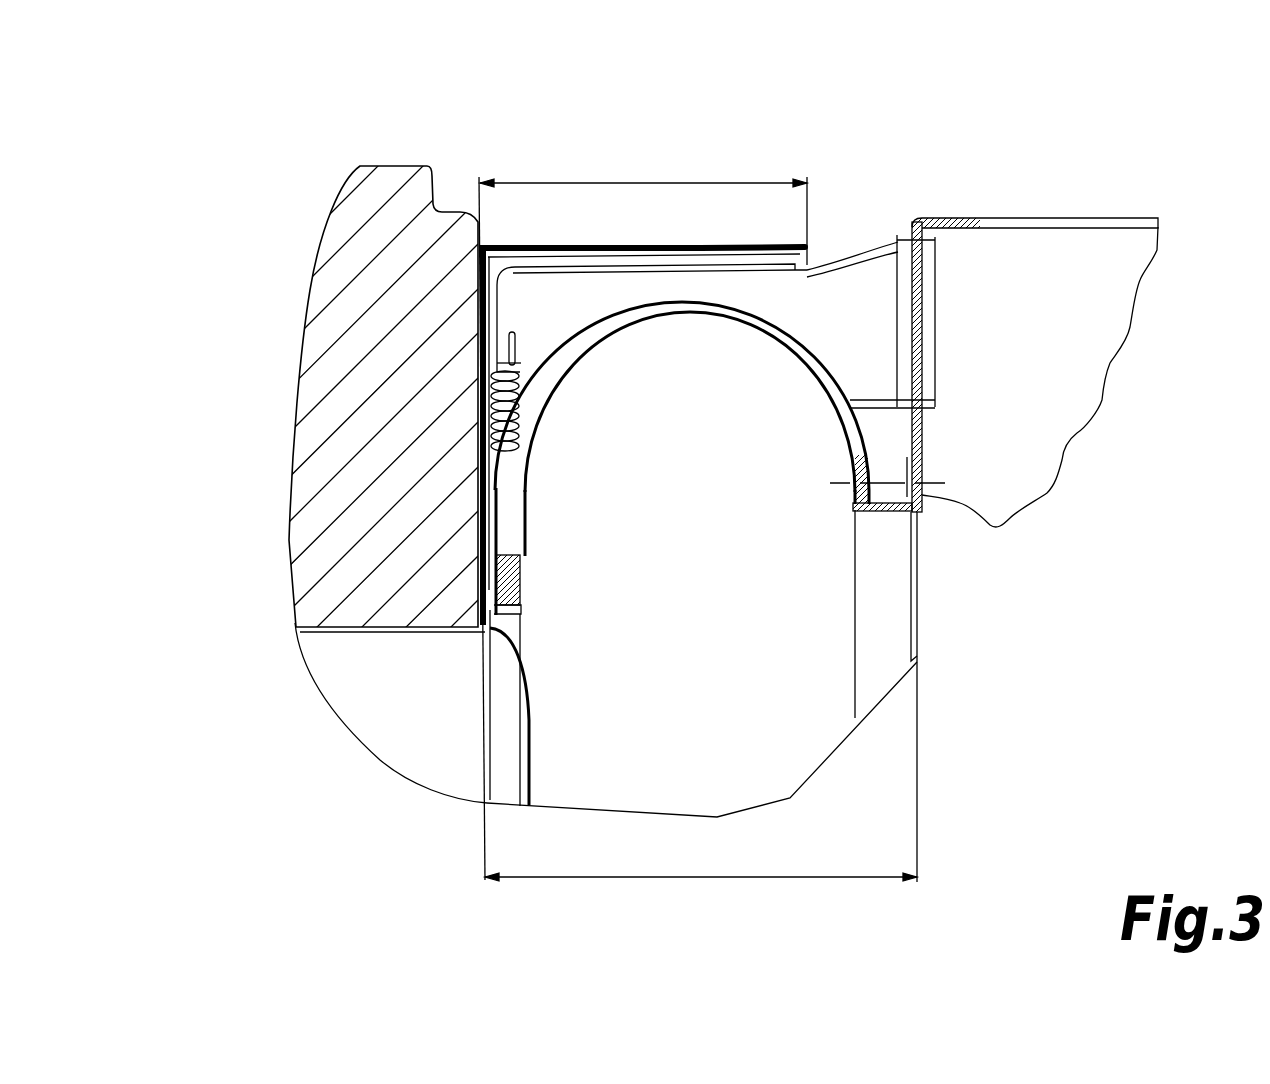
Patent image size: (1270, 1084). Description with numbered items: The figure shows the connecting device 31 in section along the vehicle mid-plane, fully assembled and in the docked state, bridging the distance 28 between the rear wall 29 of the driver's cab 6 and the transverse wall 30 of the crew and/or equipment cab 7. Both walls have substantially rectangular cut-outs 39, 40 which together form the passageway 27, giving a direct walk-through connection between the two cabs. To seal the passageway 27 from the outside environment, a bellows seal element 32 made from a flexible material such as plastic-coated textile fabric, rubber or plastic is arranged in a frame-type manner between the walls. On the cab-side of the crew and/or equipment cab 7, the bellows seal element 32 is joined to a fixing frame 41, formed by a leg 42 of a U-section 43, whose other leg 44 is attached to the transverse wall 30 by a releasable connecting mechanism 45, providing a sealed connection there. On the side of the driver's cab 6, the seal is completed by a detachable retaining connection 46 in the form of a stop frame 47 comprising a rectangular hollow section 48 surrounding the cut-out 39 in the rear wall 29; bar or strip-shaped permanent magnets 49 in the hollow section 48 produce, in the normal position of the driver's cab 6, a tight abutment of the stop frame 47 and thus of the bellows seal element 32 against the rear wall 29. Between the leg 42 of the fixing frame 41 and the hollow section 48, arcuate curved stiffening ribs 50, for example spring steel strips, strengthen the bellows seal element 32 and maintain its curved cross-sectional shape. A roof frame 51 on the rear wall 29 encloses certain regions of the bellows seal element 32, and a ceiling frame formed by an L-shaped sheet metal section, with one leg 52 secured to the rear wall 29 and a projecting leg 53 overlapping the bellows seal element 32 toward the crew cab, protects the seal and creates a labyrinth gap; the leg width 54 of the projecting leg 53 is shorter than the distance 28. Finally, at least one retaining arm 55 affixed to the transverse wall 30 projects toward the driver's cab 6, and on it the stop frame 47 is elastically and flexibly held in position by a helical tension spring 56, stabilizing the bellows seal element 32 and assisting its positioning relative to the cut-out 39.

The driver's cab 6 is at (320, 292).
The crew and/or equipment cab 7 is at (1060, 277).
The passageway 27 is at (918, 540).
The distance 28 is at (705, 880).
The rear wall 29 is at (485, 722).
The transverse wall 30 is at (918, 598).
The connecting device 31 is at (797, 170).
The bellows seal element 32 is at (808, 300).
The cut-out 39 is at (503, 756).
The cut-out 40 is at (908, 618).
The fixing frame 41 is at (840, 507).
The leg 42 is at (855, 468).
The U-section 43 is at (863, 508).
The leg 44 is at (920, 497).
The releasable connecting mechanism 45 is at (935, 463).
The detachable retaining connection 46 is at (537, 607).
The stop frame 47 is at (540, 552).
The rectangular hollow section 48 is at (536, 548).
The permanent magnets 49 is at (528, 582).
The stiffening ribs 50 is at (612, 332).
The roof frame 51 is at (660, 233).
The leg 52 is at (478, 440).
The leg 53 is at (801, 244).
The leg width 54 is at (640, 183).
The retaining arm 55 is at (655, 248).
The helical tension spring 56 is at (478, 400).